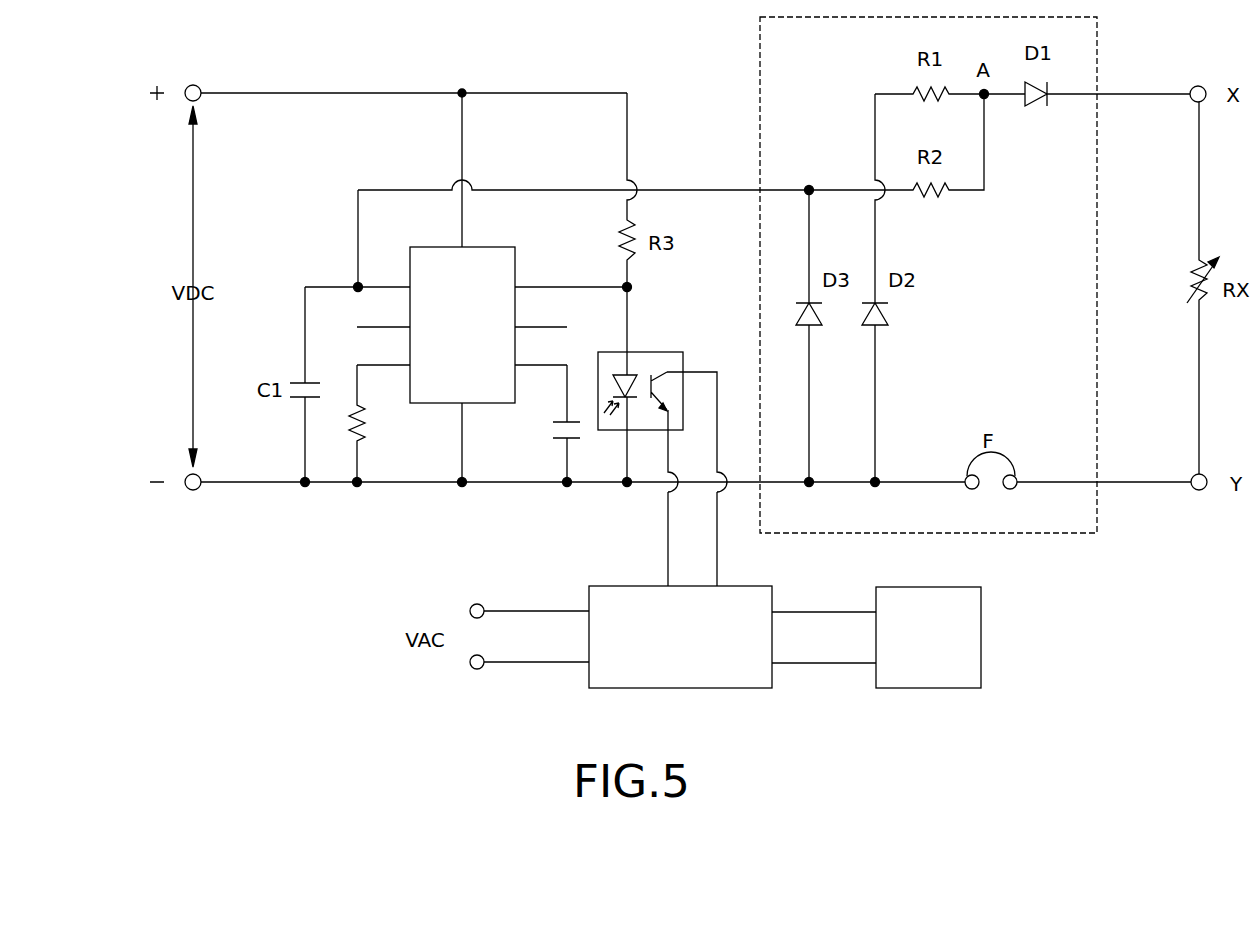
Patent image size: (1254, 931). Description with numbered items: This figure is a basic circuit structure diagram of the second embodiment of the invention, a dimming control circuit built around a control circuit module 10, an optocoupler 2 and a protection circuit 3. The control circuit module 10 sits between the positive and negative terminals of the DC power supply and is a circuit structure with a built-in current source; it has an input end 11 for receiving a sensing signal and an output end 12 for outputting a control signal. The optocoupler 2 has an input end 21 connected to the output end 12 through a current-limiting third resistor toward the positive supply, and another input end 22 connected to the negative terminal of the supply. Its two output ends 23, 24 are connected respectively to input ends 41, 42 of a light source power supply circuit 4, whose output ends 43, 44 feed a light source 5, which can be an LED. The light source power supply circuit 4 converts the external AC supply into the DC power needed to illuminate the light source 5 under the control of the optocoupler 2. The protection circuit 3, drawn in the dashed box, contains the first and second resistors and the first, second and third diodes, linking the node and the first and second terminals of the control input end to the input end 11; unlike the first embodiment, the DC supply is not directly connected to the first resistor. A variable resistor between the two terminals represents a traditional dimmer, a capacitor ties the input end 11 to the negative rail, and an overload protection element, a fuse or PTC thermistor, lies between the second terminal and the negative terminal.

The optocoupler 2 is at (665, 352).
The input end 21 is at (611, 337).
The input end 22 is at (611, 439).
The output end 23 is at (697, 420).
The output end 24 is at (685, 451).
The control circuit module 10 is at (433, 404).
The input end 11 is at (357, 274).
The output end 12 is at (571, 274).
The protection circuit 3 is at (1097, 533).
The light source power supply circuit 4 is at (589, 592).
The input end 41 is at (655, 539).
The input end 42 is at (733, 539).
The output end 43 is at (824, 600).
The output end 44 is at (824, 677).
The light source 5 is at (981, 625).